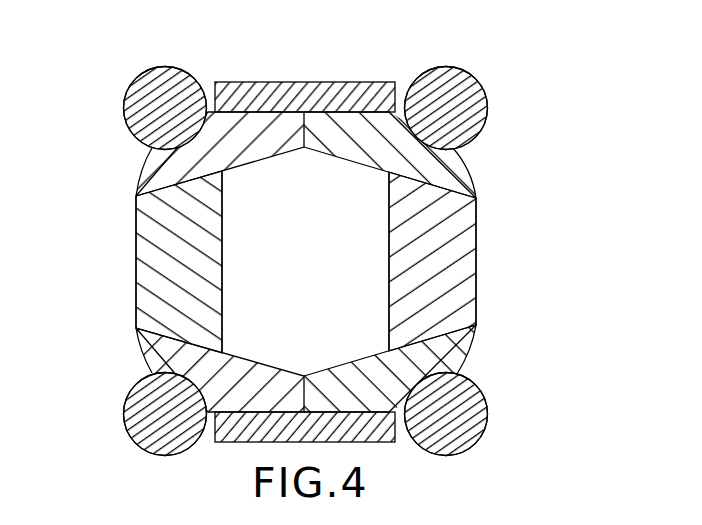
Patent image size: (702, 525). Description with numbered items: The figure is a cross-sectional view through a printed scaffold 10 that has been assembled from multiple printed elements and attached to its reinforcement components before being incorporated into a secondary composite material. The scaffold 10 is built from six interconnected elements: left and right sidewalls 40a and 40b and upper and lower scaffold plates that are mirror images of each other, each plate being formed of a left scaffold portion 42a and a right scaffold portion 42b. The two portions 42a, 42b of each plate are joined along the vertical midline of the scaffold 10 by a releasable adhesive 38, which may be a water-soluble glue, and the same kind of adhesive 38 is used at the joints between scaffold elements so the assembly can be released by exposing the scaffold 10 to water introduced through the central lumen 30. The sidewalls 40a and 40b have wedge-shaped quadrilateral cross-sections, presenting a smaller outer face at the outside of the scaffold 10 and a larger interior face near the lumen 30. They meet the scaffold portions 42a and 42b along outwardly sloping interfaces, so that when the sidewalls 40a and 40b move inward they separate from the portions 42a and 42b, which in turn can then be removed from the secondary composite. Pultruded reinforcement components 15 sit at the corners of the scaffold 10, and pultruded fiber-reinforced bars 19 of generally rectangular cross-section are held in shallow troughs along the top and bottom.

The scaffold 10 is at (499, 228).
The reinforcement component 15 is at (470, 90).
The reinforcement component 19 is at (343, 88).
The lumen 30 is at (329, 271).
The releasable adhesive 38 is at (127, 155).
The left sidewall 40a is at (135, 302).
The right sidewall 40b is at (478, 280).
The left scaffold portion 42a is at (260, 150).
The right scaffold portion 42b is at (350, 150).